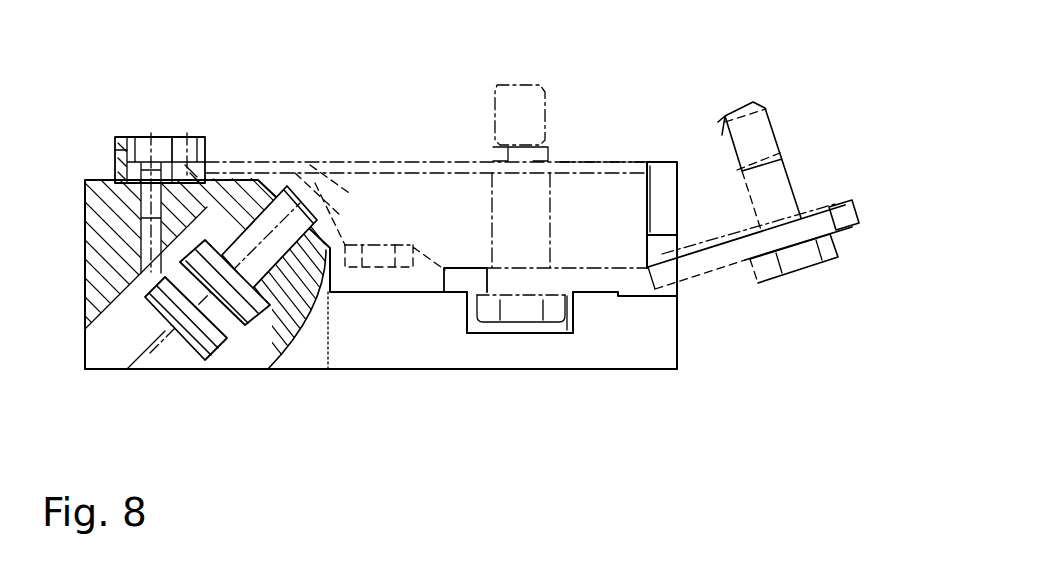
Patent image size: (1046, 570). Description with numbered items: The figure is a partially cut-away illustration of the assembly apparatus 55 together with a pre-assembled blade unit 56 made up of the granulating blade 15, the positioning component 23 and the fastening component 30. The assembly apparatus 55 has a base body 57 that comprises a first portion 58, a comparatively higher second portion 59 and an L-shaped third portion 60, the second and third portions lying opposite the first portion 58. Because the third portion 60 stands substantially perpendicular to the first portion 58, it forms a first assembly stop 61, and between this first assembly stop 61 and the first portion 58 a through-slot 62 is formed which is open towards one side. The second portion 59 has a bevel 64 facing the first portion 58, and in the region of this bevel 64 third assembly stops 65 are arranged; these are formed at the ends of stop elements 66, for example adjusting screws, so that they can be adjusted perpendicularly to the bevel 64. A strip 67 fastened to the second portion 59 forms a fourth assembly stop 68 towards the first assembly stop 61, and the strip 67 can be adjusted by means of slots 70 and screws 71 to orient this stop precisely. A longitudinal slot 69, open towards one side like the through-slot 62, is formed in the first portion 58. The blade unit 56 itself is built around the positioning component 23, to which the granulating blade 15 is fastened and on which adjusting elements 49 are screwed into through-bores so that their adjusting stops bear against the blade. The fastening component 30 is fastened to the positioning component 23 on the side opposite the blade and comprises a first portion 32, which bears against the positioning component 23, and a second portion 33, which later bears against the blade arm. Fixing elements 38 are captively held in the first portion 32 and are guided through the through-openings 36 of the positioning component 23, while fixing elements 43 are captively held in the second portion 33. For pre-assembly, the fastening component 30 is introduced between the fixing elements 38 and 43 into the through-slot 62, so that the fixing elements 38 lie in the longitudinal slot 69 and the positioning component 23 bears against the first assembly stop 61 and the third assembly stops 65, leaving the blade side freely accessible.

The granulating blade 15 is at (375, 165).
The positioning component 23 is at (428, 202).
The fastening component 30 is at (805, 212).
The first portion 32 is at (622, 282).
The second portion 33 is at (852, 205).
The through-opening 36 is at (493, 217).
The fixing element 38 is at (533, 333).
The fixing element 43 is at (842, 250).
The adjusting element 49 is at (382, 272).
The assembly apparatus 55 is at (648, 376).
The pre-assembled blade unit 56 is at (573, 147).
The base body 57 is at (400, 374).
The first portion 58 is at (512, 357).
The second portion 59 is at (298, 353).
The third portion 60 is at (660, 175).
The first assembly stop 61 is at (647, 203).
The through-slot 62 is at (665, 252).
The bevel 64 is at (276, 178).
The third assembly stop 65 is at (330, 230).
The stop element 66 is at (190, 333).
The strip 67 is at (115, 137).
The fourth assembly stop 68 is at (207, 142).
The longitudinal slot 69 is at (567, 325).
The slot 70 is at (185, 145).
The screw 71 is at (137, 137).